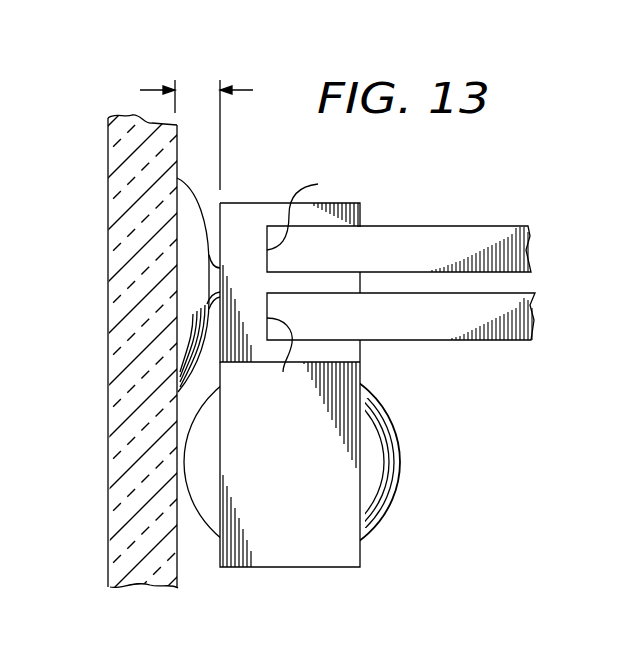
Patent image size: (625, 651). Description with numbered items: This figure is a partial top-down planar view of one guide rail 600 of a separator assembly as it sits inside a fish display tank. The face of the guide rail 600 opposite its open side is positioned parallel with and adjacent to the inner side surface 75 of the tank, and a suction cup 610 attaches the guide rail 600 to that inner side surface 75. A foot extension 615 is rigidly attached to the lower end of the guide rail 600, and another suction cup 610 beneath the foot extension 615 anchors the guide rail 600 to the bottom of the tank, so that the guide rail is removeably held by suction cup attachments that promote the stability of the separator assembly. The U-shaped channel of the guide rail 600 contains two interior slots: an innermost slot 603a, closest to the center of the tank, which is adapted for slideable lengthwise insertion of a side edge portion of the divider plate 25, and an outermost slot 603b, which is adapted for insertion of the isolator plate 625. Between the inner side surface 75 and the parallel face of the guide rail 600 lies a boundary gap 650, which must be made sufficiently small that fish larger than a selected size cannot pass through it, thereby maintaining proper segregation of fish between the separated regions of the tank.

The inner side surface 75 is at (108, 200).
The boundary gap 650 is at (197, 88).
The guide rail 600 is at (275, 203).
The innermost slot 603a is at (316, 207).
The outermost slot 603b is at (283, 372).
The divider plate 25 is at (435, 230).
The isolator plate 625 is at (422, 332).
The suction cup 610 is at (400, 476).
The foot extension 615 is at (318, 567).